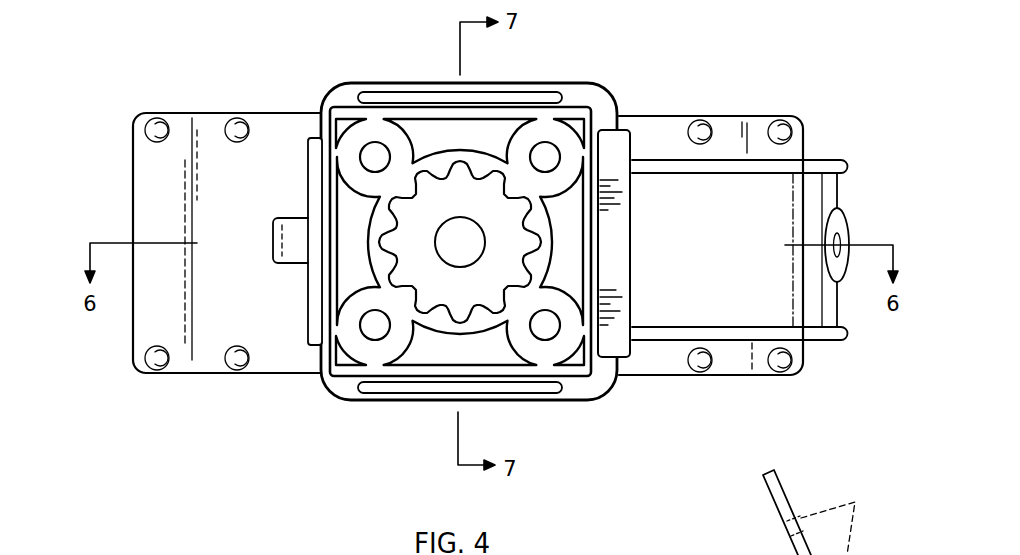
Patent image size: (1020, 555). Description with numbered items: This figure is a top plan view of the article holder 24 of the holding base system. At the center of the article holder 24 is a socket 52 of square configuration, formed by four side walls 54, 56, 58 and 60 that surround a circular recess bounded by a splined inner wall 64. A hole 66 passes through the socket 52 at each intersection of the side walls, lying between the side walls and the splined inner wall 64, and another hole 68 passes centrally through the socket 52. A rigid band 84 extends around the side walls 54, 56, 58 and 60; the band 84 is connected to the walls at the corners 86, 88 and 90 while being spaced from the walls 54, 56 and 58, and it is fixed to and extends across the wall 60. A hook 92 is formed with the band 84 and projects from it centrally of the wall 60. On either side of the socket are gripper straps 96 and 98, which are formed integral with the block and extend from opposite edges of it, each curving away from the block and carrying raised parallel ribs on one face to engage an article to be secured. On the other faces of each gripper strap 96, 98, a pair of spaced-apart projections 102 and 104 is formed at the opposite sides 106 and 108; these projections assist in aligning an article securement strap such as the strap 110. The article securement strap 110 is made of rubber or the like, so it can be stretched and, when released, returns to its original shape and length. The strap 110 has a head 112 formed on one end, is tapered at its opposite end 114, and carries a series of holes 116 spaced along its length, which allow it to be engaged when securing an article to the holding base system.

The article holder 24 is at (632, 75).
The socket 52 is at (521, 406).
The side wall 54 is at (440, 375).
The side wall 56 is at (593, 237).
The side wall 58 is at (518, 110).
The side wall 60 is at (327, 297).
The splined inner wall 64 is at (459, 163).
The hole 66 is at (370, 152).
The hole 68 is at (455, 259).
The rigid band 84 is at (366, 396).
The corner 86 is at (583, 391).
The corner 88 is at (586, 98).
The corner 90 is at (340, 86).
The hook 92 is at (273, 223).
The gripper strap 96 is at (145, 332).
The gripper strap 98 is at (790, 152).
The projection 102 is at (230, 124).
The projection 104 is at (224, 362).
The side 106 is at (141, 118).
The side 108 is at (138, 371).
The article securement strap 110 is at (780, 307).
The head 112 is at (620, 277).
The tapered end 114 is at (765, 477).
The holes 116 is at (845, 237).